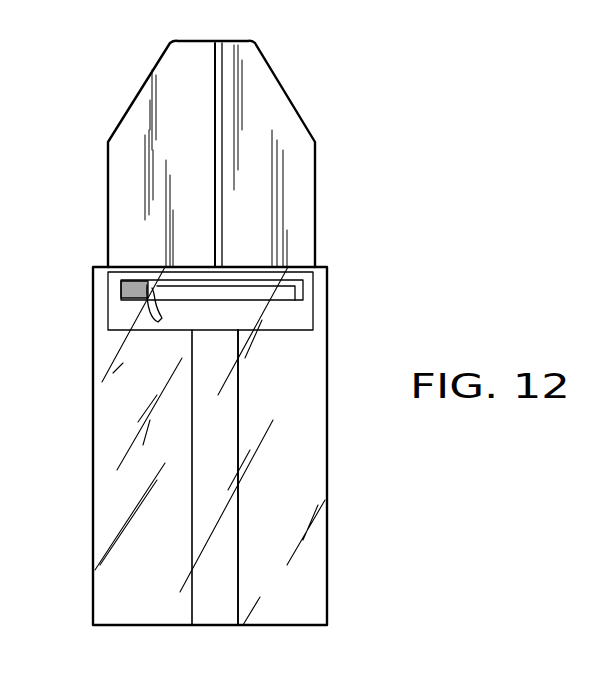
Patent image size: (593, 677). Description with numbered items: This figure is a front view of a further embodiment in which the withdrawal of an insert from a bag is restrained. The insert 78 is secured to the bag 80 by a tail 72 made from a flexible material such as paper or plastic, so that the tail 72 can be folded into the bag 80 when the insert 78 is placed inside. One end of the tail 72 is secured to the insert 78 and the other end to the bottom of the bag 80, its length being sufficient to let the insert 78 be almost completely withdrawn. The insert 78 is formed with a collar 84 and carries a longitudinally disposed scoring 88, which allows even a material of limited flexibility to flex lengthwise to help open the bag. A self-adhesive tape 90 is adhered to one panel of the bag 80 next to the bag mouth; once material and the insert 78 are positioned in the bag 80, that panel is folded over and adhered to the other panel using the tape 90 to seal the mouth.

The tail 72 is at (238, 513).
The insert 78 is at (298, 110).
The bag 80 is at (327, 362).
The collar 84 is at (310, 308).
The scoring 88 is at (215, 64).
The self-adhesive tape 90 is at (121, 288).